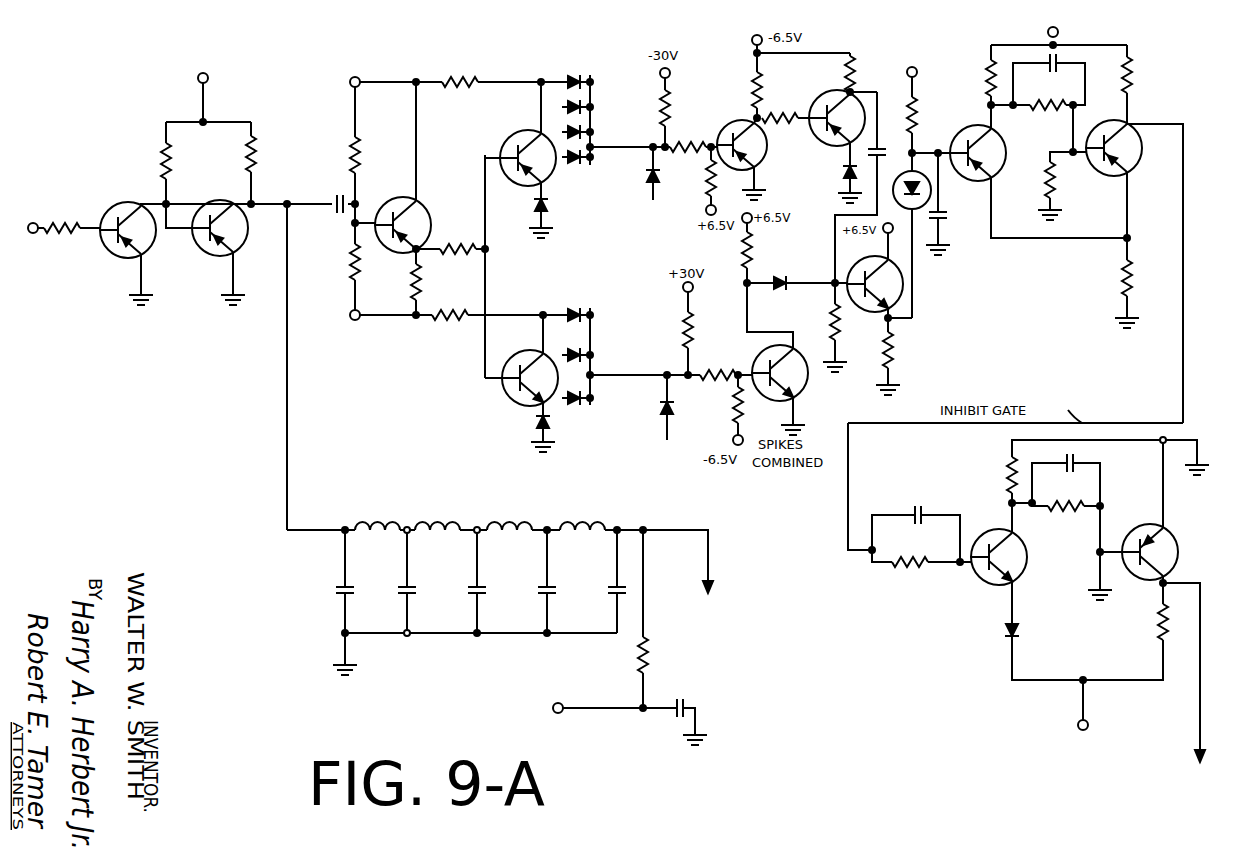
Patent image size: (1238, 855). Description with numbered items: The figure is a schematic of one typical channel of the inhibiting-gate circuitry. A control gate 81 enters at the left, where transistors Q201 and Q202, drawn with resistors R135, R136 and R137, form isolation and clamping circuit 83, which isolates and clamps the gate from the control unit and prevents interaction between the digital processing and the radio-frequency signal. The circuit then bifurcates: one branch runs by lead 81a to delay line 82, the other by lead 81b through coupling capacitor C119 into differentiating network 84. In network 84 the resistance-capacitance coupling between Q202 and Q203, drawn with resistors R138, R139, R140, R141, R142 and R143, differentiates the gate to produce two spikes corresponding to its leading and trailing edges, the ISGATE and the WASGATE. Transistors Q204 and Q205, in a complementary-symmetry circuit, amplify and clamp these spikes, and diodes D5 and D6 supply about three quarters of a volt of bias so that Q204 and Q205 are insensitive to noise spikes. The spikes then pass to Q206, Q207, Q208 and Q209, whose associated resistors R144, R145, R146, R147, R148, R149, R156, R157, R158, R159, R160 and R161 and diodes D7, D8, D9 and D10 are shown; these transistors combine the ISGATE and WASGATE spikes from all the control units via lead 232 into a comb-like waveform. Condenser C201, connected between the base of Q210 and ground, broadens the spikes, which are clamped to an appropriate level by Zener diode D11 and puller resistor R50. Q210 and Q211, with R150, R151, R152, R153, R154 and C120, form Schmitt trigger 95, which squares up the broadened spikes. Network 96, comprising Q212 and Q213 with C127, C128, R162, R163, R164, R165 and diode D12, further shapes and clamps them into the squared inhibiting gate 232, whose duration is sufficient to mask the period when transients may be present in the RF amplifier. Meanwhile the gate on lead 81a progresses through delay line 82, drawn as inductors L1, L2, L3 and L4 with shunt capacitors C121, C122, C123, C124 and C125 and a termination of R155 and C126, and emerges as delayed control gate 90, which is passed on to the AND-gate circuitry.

The control gate 81 is at (38, 223).
The lead 81a is at (288, 478).
The lead 81b is at (289, 203).
The isolation means 83 is at (179, 198).
The differentiating network 84 is at (440, 266).
The delay line 82 is at (497, 636).
The delayed control gate 90 is at (712, 562).
The Schmitt trigger 95 is at (1038, 225).
The network 96 is at (1028, 599).
The inhibiting gate 232 is at (921, 297).
The resistor R135 is at (62, 219).
The resistor R136 is at (183, 161).
The resistor R137 is at (265, 154).
The resistor R138 is at (371, 155).
The resistor R139 is at (369, 267).
The resistor R140 is at (460, 73).
The resistor R141 is at (458, 241).
The resistor R142 is at (435, 282).
The resistor R143 is at (449, 325).
The resistor R144 is at (683, 106).
The resistor R145 is at (687, 155).
The resistor R146 is at (727, 179).
The resistor R147 is at (774, 90).
The resistor R148 is at (782, 127).
The resistor R149 is at (868, 74).
The resistor R150 is at (975, 78).
The resistor R151 is at (1146, 75).
The resistor R152 is at (1048, 97).
The resistor R153 is at (1069, 180).
The resistor R154 is at (1146, 278).
The resistor R155 is at (662, 655).
The resistor R156 is at (670, 330).
The resistor R157 is at (718, 365).
The resistor R158 is at (754, 405).
The resistor R159 is at (765, 250).
The resistor R160 is at (853, 322).
The resistor R161 is at (907, 350).
The resistor R162 is at (904, 576).
The resistor R163 is at (991, 475).
The resistor R164 is at (1064, 517).
The resistor R165 is at (1150, 625).
The puller resistor R50 is at (900, 115).
The capacitor C119 is at (324, 214).
The capacitor C120 is at (1072, 59).
The capacitor C121 is at (326, 583).
The capacitor C122 is at (390, 581).
The capacitor C123 is at (463, 580).
The capacitor C124 is at (530, 580).
The capacitor C125 is at (603, 580).
The capacitor C126 is at (698, 700).
The capacitor C127 is at (910, 505).
The capacitor C128 is at (1086, 457).
The condenser C201 is at (951, 227).
The inductor L1 is at (377, 517).
The inductor L2 is at (437, 517).
The inductor L3 is at (509, 516).
The inductor L4 is at (582, 516).
The diode D5 is at (529, 208).
The diode D6 is at (554, 426).
The diode D7 is at (661, 180).
The diode D8 is at (676, 403).
The diode D9 is at (839, 177).
The diode D10 is at (781, 293).
The Zener diode D11 is at (905, 199).
The diode D12 is at (1028, 629).
The transistor Q201 is at (120, 235).
The transistor Q202 is at (219, 235).
The transistor Q203 is at (401, 235).
The transistor Q204 is at (524, 147).
The transistor Q205 is at (527, 368).
The transistor Q206 is at (736, 135).
The transistor Q207 is at (832, 110).
The transistor Q208 is at (769, 368).
The transistor Q209 is at (872, 278).
The transistor Q210 is at (977, 144).
The transistor Q211 is at (1126, 139).
The transistor Q212 is at (992, 571).
The transistor Q213 is at (1163, 552).